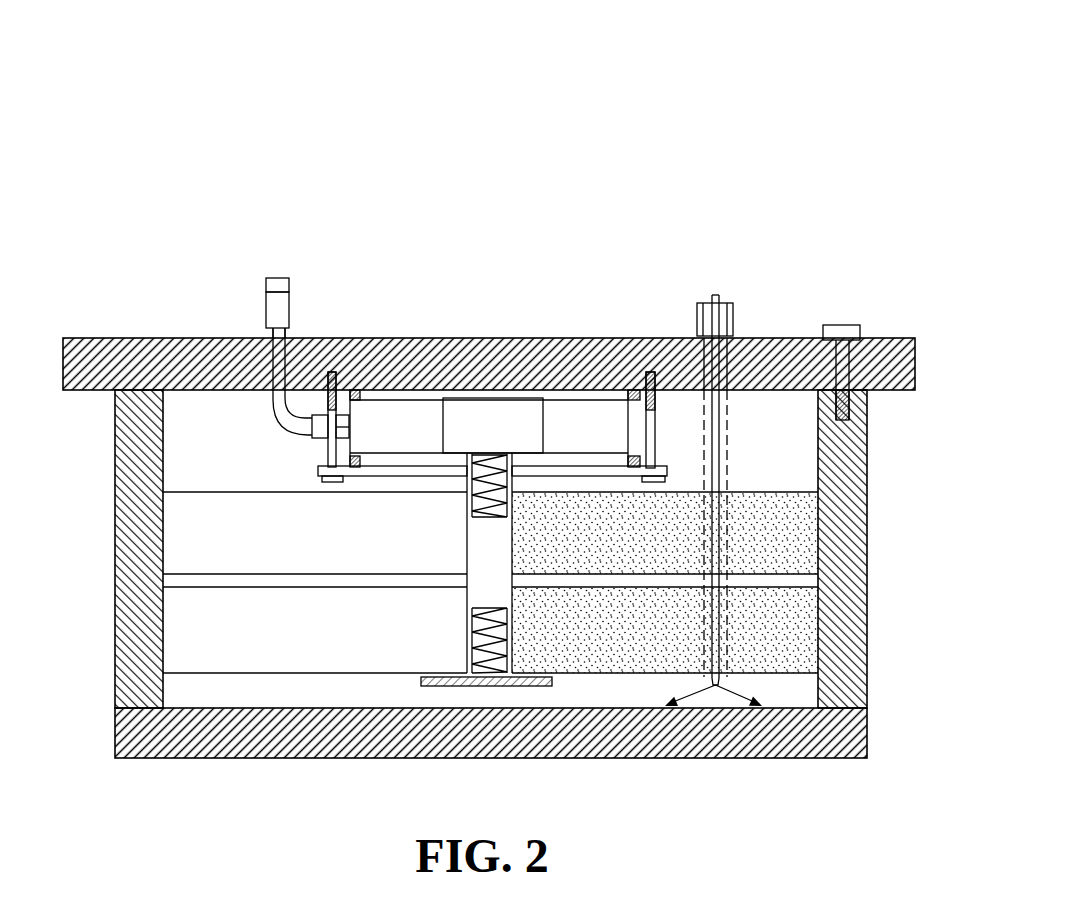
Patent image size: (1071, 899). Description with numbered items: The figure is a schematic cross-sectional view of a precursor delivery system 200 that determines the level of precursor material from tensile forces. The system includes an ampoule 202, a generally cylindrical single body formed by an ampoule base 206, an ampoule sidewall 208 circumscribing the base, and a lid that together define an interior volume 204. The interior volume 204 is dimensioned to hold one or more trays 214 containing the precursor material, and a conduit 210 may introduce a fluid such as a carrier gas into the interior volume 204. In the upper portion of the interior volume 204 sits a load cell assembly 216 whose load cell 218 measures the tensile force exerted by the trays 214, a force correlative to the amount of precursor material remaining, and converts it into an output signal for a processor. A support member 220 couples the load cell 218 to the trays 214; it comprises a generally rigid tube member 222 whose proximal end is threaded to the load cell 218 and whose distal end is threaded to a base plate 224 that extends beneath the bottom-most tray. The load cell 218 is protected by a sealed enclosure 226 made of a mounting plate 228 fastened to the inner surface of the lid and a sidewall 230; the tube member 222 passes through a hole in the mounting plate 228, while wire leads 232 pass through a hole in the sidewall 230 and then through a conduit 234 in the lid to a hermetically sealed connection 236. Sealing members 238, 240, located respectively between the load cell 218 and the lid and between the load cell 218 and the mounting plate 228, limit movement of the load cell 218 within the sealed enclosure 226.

The precursor delivery system 200 is at (648, 94).
The ampoule 202 is at (477, 523).
The interior volume 204 is at (229, 451).
The ampoule base 206 is at (600, 745).
The ampoule sidewall 208 is at (120, 570).
The conduit 210 is at (720, 453).
The trays 214 is at (325, 546).
The load cell assembly 216 is at (678, 415).
The load cell 218 is at (404, 393).
The support member 220 is at (446, 645).
The tube member 222 is at (478, 593).
The base plate 224 is at (502, 686).
The sealed enclosure 226 is at (297, 447).
The mounting plate 228 is at (567, 466).
The sidewall 230 is at (328, 459).
The wire leads 232 is at (302, 412).
The conduit 234 is at (292, 405).
The hermetically sealed connection 236 is at (278, 278).
The sealing member 238 is at (629, 390).
The sealing member 240 is at (612, 470).